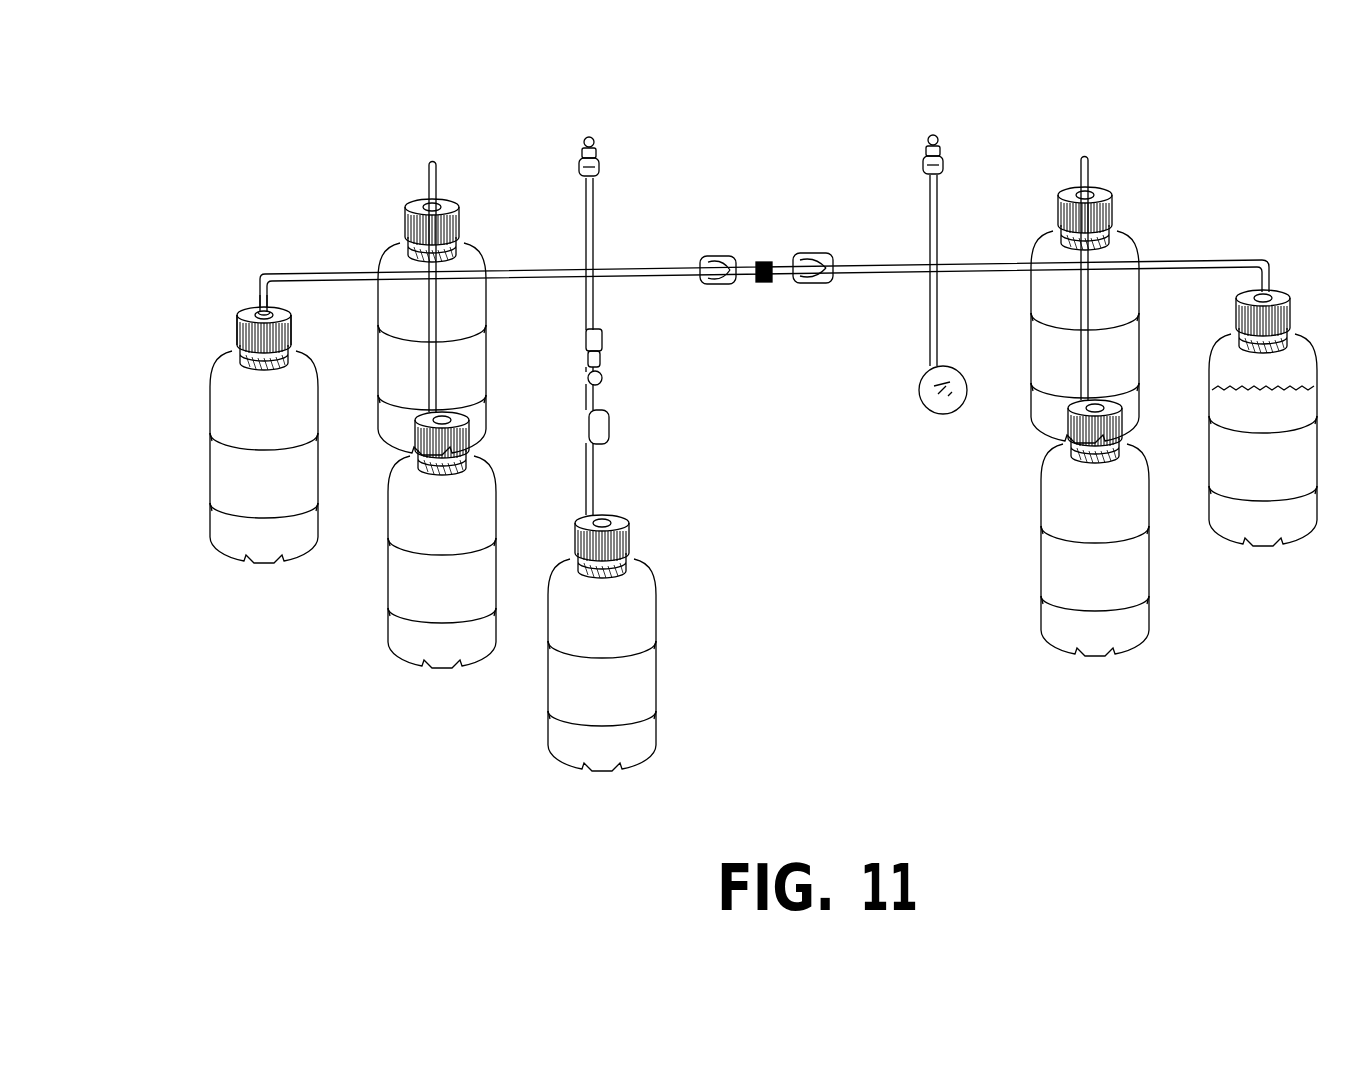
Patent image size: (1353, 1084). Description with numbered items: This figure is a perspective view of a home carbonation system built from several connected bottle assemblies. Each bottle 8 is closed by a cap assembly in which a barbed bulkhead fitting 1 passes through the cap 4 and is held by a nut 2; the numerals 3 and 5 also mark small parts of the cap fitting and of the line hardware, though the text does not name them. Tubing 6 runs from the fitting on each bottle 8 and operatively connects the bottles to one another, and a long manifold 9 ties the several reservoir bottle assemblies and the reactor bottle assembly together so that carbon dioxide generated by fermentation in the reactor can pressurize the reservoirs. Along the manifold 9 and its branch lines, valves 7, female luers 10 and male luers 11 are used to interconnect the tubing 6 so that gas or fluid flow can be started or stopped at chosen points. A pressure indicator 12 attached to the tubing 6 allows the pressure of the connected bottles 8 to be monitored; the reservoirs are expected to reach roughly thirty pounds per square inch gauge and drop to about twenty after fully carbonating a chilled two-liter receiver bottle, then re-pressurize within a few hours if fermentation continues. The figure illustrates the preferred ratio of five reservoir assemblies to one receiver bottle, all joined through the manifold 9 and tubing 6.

The barbed bulkhead fitting 1 is at (263, 312).
The nut 2 is at (279, 313).
The cap 3 is at (245, 320).
The cap 4 is at (288, 333).
The valve 5 is at (758, 258).
The tubing 6 is at (1205, 258).
The valve 7 is at (711, 254).
The bottle 8 is at (226, 396).
The manifold 9 is at (504, 270).
The female luer 10 is at (597, 157).
The male luer 11 is at (604, 370).
The pressure indicator 12 is at (928, 410).